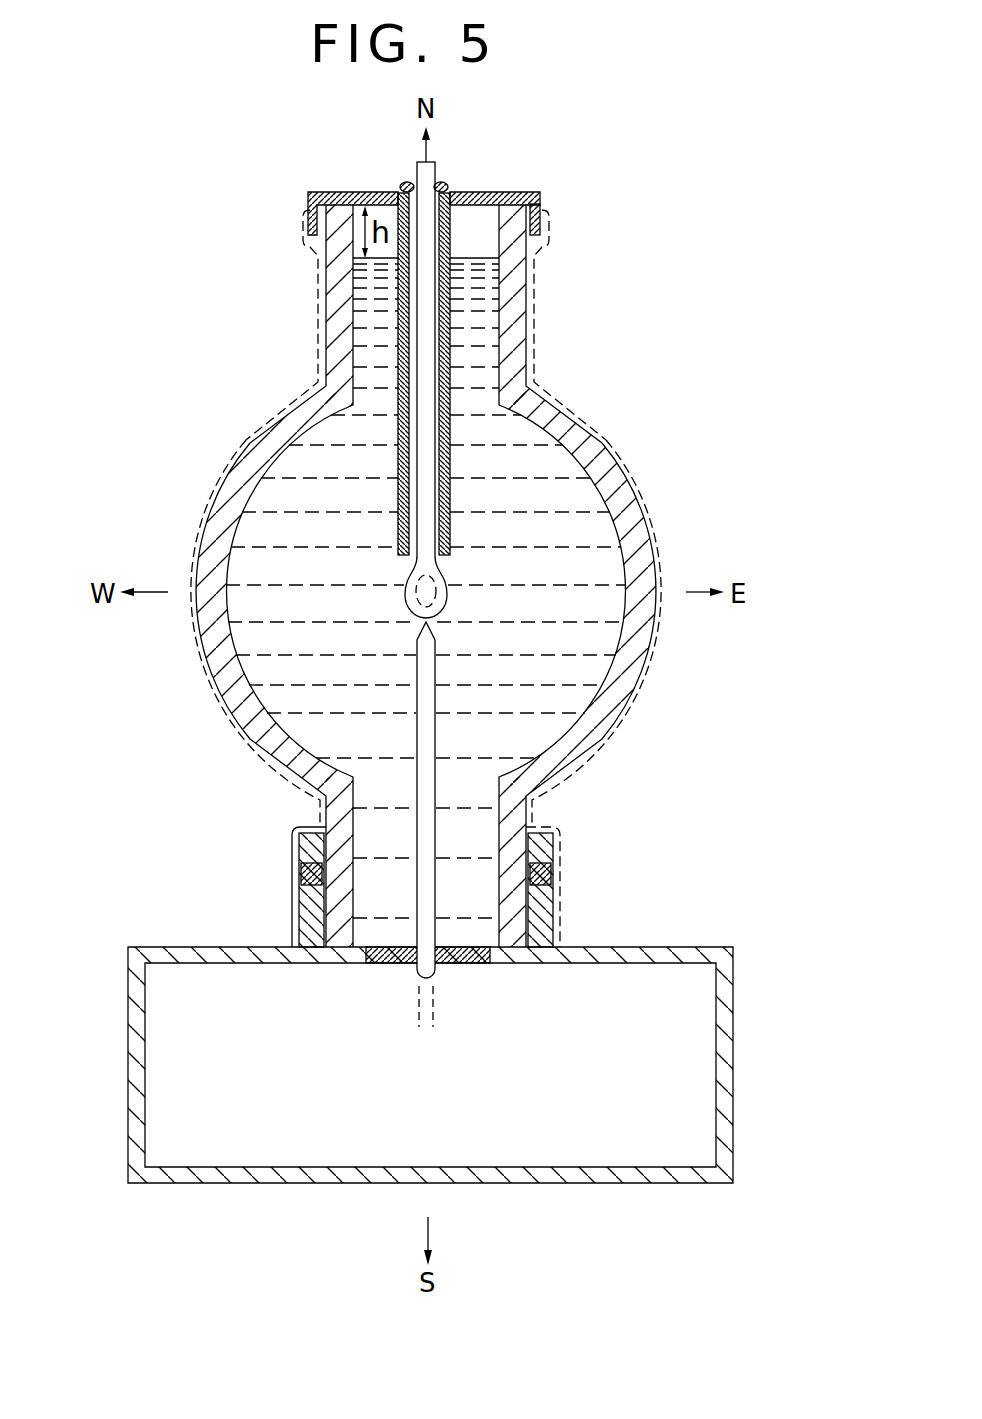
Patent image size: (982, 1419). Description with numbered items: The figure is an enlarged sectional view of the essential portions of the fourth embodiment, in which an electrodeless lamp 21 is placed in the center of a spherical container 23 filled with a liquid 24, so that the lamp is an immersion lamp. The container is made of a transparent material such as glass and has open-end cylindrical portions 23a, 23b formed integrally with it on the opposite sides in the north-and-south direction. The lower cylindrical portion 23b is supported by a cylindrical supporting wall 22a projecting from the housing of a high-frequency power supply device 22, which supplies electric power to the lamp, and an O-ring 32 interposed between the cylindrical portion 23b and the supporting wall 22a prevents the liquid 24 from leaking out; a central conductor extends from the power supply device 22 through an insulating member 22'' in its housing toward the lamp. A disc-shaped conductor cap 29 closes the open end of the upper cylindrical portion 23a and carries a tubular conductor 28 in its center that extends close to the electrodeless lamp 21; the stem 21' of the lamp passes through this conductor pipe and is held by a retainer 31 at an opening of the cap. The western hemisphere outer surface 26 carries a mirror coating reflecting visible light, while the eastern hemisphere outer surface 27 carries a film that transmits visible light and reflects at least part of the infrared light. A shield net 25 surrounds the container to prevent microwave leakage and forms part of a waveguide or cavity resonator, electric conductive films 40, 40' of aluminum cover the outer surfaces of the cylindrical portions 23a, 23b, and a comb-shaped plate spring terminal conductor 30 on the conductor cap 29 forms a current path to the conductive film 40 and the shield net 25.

The electrodeless lamp 21 is at (465, 587).
The stem 21' is at (511, 360).
The high-frequency power supply device 22 is at (474, 902).
The cylindrical supporting wall 22a is at (555, 918).
The insulating member 22'' is at (420, 997).
The spherical container 23 is at (232, 487).
The cylindrical portion 23a is at (520, 352).
The cylindrical portion 23b is at (530, 808).
The liquid 24 is at (292, 452).
The shield net 25 is at (575, 412).
The western hemisphere outer surface 26 is at (205, 647).
The eastern hemisphere outer surface 27 is at (605, 452).
The tubular conductor 28 is at (455, 285).
The conductor cap 29 is at (500, 192).
The terminal conductor 30 is at (541, 222).
The retainer 31 is at (445, 183).
The O-ring 32 is at (552, 872).
The electric conductive film 40 is at (425, 325).
The electric conductive film 40' is at (262, 887).